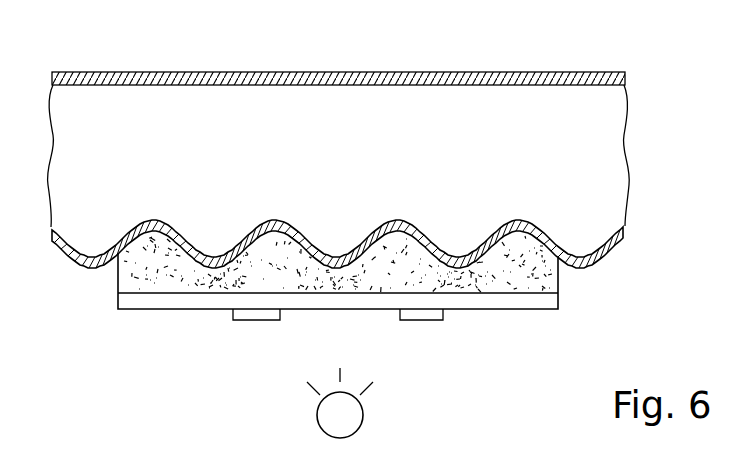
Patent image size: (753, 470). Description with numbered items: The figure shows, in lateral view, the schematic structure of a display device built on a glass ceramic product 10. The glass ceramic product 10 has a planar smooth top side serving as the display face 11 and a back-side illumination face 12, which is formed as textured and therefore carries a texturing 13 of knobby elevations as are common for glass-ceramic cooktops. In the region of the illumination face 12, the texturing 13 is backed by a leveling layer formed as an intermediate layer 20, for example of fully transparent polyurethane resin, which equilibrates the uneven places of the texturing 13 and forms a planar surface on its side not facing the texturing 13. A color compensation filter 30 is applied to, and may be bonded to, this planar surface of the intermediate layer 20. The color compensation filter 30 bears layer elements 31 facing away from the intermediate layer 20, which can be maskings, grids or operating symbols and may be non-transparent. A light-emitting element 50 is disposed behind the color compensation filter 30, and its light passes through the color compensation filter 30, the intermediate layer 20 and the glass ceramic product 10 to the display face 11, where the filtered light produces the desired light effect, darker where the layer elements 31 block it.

The glass ceramic product 10 is at (470, 96).
The display face 11 is at (396, 67).
The illumination face 12 is at (613, 263).
The texturing 13 is at (63, 278).
The intermediate layer 20 is at (538, 273).
The color compensation filter 30 is at (483, 300).
The layer elements 31 is at (257, 320).
The light-emitting element 50 is at (335, 420).